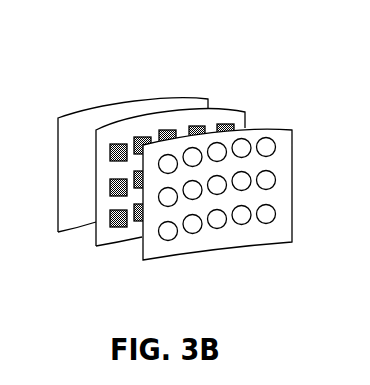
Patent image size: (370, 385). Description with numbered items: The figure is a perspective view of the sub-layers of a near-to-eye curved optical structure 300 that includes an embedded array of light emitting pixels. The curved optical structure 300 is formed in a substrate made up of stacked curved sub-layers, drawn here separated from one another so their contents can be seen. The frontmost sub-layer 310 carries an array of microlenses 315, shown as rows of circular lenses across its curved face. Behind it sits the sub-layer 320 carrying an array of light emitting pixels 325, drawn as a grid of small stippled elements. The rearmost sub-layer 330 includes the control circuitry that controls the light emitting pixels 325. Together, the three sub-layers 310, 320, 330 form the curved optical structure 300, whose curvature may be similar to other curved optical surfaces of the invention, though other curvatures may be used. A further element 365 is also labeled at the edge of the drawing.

The display assembly 300 is at (196, 138).
The front panel with apertures 310 is at (251, 202).
The apertures 315 is at (175, 237).
The middle panel / circuit board 320 is at (169, 163).
The electronic components / pads 325 is at (117, 145).
The back panel 330 is at (163, 95).
The element 365 is at (360, 239).